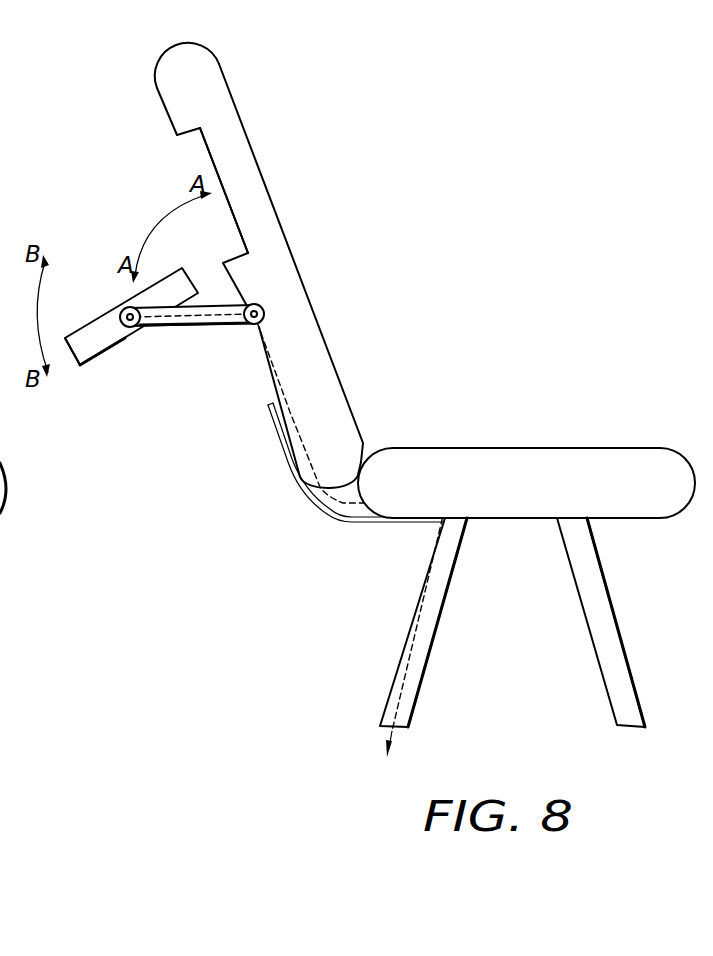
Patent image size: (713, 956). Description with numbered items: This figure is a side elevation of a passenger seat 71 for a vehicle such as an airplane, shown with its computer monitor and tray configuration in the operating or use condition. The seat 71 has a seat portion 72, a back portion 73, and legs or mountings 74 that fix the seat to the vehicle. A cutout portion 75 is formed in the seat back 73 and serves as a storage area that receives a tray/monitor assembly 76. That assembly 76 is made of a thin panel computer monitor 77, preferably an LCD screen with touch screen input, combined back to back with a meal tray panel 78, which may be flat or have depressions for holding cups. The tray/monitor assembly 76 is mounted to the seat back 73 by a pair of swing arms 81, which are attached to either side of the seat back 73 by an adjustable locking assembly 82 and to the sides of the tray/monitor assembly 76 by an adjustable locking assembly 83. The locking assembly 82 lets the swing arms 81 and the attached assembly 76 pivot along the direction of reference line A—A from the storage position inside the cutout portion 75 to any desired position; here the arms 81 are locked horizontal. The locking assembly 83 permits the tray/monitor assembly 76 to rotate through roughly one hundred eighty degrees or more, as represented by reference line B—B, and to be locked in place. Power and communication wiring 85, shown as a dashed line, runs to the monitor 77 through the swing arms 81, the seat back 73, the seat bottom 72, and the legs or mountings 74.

The seat 71 is at (280, 88).
The seat portion 72 is at (486, 447).
The back portion 73 is at (330, 343).
The legs or mountings 74 is at (457, 568).
The cutout portion 75 is at (236, 191).
The tray/monitor assembly 76 is at (112, 396).
The computer monitor 77 is at (110, 350).
The meal tray panel 78 is at (90, 320).
The swing arms 81 is at (203, 327).
The adjustable locking assembly 82 is at (266, 311).
The adjustable locking assembly 83 is at (125, 303).
The wiring 85 is at (290, 412).